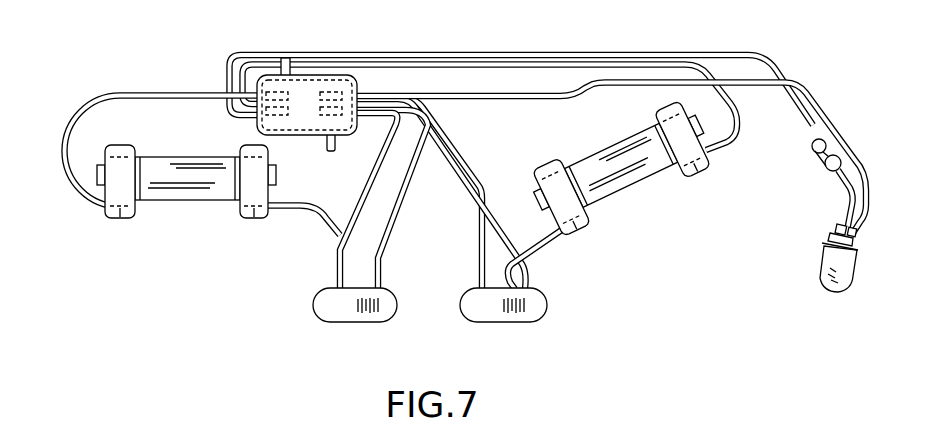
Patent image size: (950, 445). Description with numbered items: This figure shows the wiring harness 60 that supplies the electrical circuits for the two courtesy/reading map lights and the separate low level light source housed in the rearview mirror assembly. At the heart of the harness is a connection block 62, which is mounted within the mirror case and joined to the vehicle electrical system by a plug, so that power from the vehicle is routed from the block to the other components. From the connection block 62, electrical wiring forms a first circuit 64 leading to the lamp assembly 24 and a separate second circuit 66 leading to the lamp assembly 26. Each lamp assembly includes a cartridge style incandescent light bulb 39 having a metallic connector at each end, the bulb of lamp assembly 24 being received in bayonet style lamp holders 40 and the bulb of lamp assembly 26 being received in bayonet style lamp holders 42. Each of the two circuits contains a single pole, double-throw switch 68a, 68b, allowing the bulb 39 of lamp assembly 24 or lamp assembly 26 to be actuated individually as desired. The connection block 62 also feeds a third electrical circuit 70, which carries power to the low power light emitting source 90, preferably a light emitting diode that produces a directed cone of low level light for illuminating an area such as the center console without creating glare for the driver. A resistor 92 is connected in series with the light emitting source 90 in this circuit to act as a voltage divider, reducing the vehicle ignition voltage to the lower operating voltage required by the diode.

The lamp assembly 24 is at (161, 230).
The lamp assembly 26 is at (650, 207).
The light bulb 39 is at (178, 200).
The lamp holder 40 is at (117, 218).
The lamp holder 42 is at (583, 235).
The wiring harness 60 is at (140, 73).
The connection block 62 is at (308, 90).
The electrical circuit 64 is at (327, 236).
The electrical circuit 66 is at (463, 220).
The single pole, double-throw switch 68a is at (336, 313).
The single pole, double-throw switch 68b is at (493, 313).
The third electrical circuit 70 is at (657, 37).
The light emitting source 90 is at (822, 305).
The resistor 92 is at (813, 152).